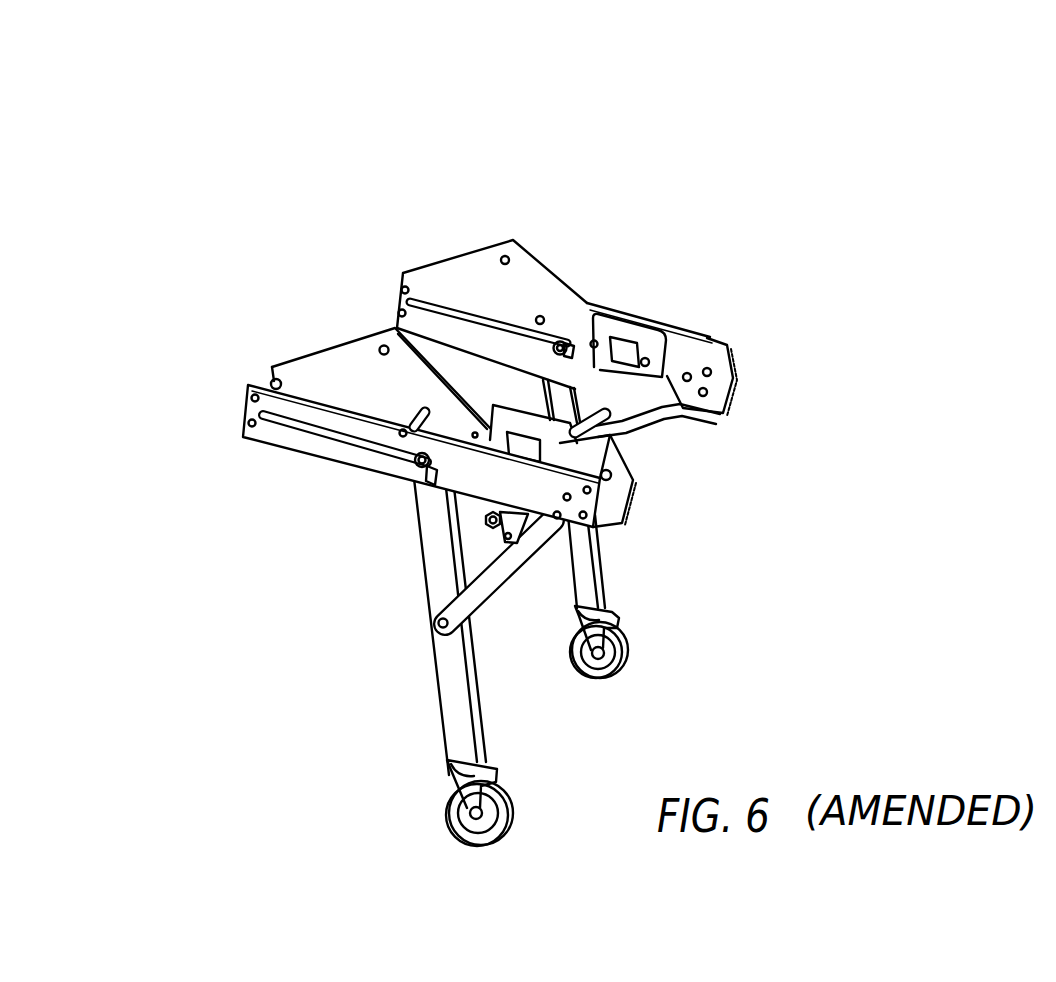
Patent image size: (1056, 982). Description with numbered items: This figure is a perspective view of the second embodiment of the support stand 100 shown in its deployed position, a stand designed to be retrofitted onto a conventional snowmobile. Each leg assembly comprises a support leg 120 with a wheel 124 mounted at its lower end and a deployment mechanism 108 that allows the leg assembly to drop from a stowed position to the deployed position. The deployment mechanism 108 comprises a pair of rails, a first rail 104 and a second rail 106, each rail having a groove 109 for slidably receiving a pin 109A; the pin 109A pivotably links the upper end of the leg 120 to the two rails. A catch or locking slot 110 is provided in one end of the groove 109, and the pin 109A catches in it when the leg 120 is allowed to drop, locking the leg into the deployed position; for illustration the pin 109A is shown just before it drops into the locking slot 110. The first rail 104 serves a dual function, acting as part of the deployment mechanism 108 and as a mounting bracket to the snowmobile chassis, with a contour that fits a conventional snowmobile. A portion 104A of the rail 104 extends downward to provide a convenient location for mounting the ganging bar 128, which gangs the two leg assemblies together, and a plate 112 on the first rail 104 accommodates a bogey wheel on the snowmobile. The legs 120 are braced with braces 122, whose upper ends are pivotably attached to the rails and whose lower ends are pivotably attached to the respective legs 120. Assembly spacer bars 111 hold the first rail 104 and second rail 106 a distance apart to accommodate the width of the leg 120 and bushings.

The support stand 100 is at (566, 120).
The first rail 104 is at (430, 276).
The portion of the rail 104A is at (481, 514).
The second rail 106 is at (727, 345).
The deployment mechanism 108 is at (520, 300).
The groove 109 is at (445, 300).
The pin 109A is at (416, 463).
The locking slot 110 is at (586, 322).
The assembly spacer bars 111 is at (268, 368).
The plate 112 is at (637, 335).
The support leg 120 is at (455, 697).
The brace 122 is at (690, 417).
The wheel 124 is at (455, 822).
The ganging bar 128 is at (608, 414).